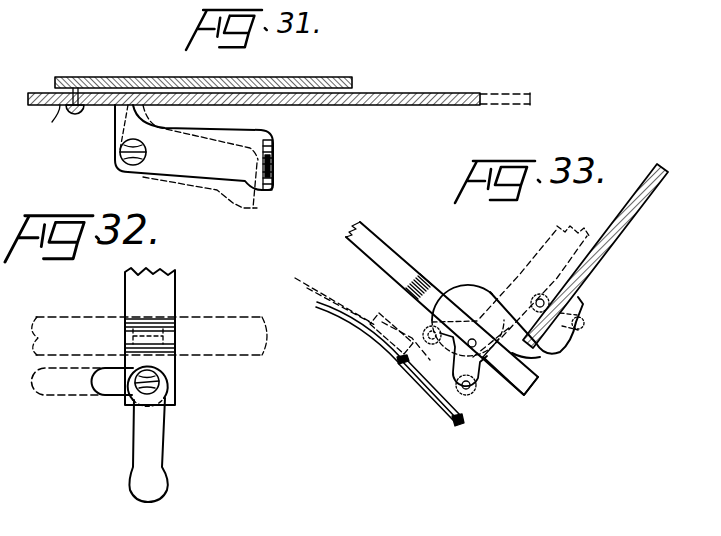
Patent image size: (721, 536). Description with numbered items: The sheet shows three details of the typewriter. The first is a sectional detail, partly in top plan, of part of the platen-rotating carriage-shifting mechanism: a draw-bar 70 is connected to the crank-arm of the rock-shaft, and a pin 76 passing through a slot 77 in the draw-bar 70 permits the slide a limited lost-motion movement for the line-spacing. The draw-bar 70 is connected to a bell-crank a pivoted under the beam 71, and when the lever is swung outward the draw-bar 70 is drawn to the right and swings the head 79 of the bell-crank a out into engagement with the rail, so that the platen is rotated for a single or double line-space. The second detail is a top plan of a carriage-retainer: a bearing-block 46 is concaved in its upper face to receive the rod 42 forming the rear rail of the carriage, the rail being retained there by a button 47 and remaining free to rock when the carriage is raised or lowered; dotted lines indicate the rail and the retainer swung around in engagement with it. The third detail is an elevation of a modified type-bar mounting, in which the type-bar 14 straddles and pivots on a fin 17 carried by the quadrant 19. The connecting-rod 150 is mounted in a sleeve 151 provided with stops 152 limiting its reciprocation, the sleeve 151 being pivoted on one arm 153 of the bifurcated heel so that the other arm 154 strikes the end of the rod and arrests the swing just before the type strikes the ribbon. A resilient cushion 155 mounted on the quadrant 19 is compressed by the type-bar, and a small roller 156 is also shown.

In FIG. 31, the draw-bar 70 is at (279, 113).
In FIG. 31, the beam 71 is at (203, 70).
In FIG. 31, the pin 76 is at (79, 114).
In FIG. 31, the slot 77 is at (46, 126).
In FIG. 31, the head 79 is at (273, 176).
In FIG. 31, the bell-crank a is at (194, 156).
In FIG. 32, the bearing-block 46 is at (176, 284).
In FIG. 32, the rod 42 is at (167, 339).
In FIG. 32, the button 47 is at (115, 434).
In FIG. 33, the type-bar 14 is at (468, 304).
In FIG. 33, the fin 17 is at (507, 309).
In FIG. 33, the quadrant 19 is at (595, 256).
In FIG. 33, the connecting-rod 150 is at (354, 322).
In FIG. 33, the sleeve 151 is at (388, 362).
In FIG. 33, the stops 152 is at (421, 408).
In FIG. 33, the arm 153 is at (448, 368).
In FIG. 33, the arm 154 is at (522, 383).
In FIG. 33, the cushion 155 is at (529, 275).
In FIG. 33, the roller 156 is at (503, 330).